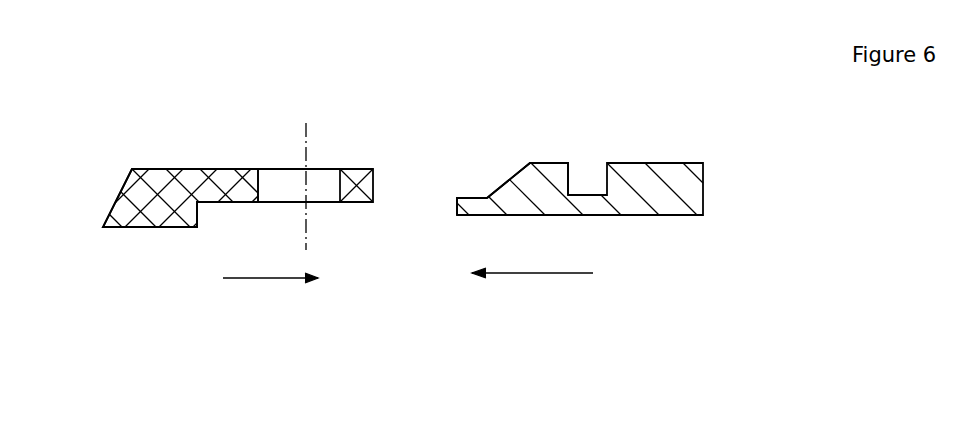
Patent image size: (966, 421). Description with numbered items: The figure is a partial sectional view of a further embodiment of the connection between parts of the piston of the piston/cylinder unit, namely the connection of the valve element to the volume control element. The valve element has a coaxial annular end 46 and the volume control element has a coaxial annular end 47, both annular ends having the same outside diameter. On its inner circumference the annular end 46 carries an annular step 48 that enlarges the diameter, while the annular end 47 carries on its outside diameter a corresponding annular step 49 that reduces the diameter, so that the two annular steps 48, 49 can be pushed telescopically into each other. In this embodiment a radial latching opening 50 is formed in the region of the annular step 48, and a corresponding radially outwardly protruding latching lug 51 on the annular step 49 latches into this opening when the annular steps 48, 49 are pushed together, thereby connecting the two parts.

The annular end 46 is at (167, 188).
The annular end 47 is at (658, 183).
The annular step 48 is at (242, 210).
The annular step 49 is at (473, 196).
The radial latching opening 50 is at (285, 186).
The latching lug 51 is at (538, 178).